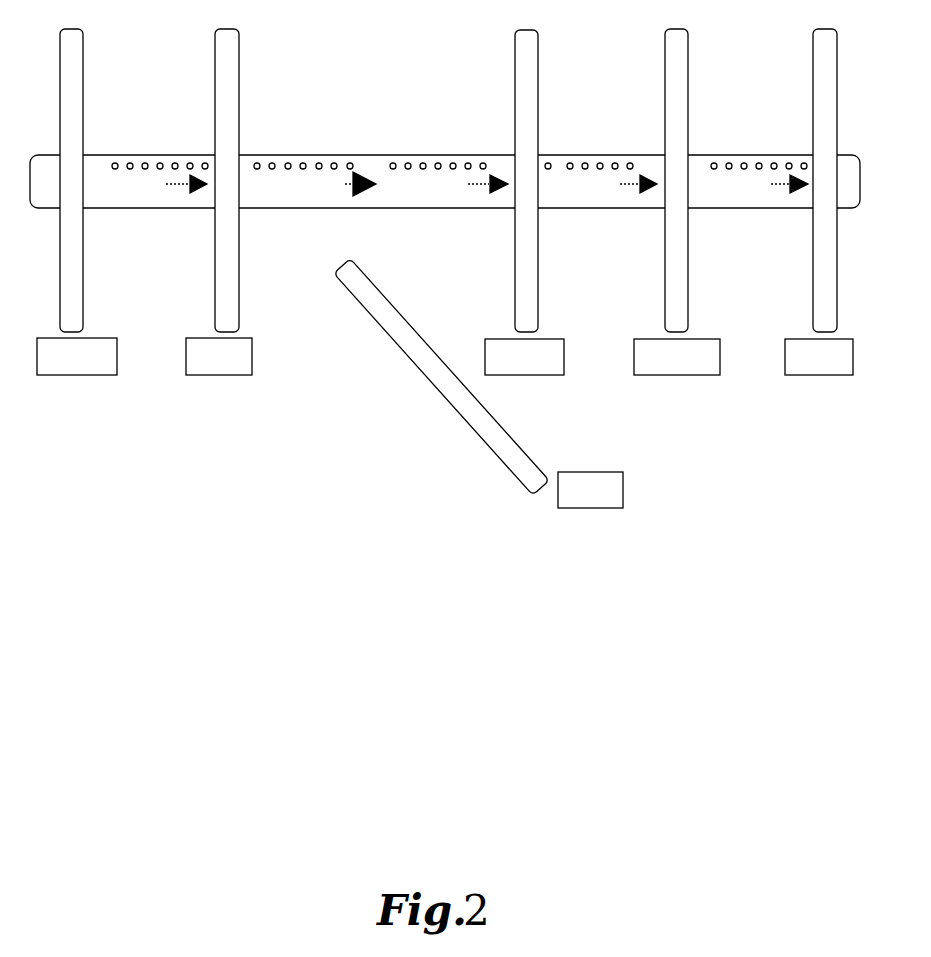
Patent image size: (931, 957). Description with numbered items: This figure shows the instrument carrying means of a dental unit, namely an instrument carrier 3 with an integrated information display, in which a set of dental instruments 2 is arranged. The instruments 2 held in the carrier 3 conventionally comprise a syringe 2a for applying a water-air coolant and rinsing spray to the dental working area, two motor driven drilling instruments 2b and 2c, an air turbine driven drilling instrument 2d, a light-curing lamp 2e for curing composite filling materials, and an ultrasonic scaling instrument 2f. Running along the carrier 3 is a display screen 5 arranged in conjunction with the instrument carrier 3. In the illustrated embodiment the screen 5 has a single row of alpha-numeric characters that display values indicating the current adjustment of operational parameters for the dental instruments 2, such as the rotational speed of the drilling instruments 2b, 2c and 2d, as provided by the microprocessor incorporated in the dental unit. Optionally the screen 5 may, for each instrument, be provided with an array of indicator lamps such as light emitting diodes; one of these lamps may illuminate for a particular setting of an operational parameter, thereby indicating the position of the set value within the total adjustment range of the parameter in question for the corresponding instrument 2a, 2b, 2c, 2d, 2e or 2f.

The dental instruments 2 is at (476, 377).
The syringe 2a is at (78, 202).
The motor driven drilling instrument 2b is at (231, 202).
The motor driven drilling instrument 2c is at (478, 383).
The air turbine driven drilling instrument 2d is at (533, 202).
The LC lamp 2e is at (683, 202).
The ultrasonic scaling instrument 2f is at (833, 202).
The instrument carrier 3 is at (445, 108).
The display screen 5 is at (445, 167).